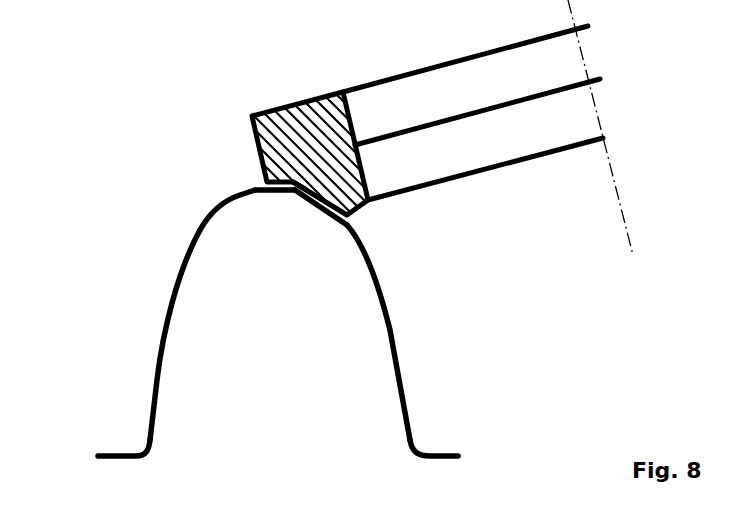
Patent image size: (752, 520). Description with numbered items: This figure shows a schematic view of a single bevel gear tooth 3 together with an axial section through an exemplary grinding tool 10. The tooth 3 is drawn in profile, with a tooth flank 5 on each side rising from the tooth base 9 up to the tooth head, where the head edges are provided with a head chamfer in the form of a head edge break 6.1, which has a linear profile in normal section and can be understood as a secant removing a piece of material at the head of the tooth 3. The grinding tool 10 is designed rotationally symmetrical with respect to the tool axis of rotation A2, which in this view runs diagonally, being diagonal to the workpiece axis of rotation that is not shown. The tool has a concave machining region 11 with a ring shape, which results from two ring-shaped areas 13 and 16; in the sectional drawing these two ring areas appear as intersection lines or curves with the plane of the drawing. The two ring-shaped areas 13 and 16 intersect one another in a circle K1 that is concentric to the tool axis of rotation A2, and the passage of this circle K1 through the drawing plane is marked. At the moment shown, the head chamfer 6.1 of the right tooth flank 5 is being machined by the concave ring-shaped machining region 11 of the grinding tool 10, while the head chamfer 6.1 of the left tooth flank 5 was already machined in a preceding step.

The tooth 3 is at (95, 197).
The tooth flank 5 is at (385, 295).
The head edge break 6.1 is at (232, 212).
The tooth base 9 is at (112, 459).
The grinding tool 10 is at (306, 83).
The machining region 11 is at (298, 218).
The ring-shaped area 13 is at (343, 176).
The ring-shaped area 16 is at (252, 128).
The circle K1 is at (300, 168).
The tool axis of rotation A2 is at (609, 142).